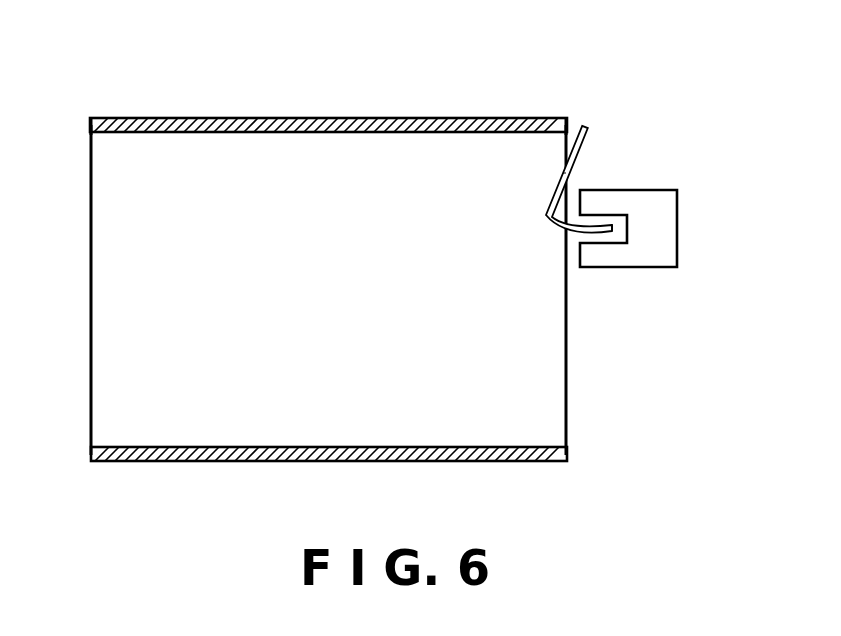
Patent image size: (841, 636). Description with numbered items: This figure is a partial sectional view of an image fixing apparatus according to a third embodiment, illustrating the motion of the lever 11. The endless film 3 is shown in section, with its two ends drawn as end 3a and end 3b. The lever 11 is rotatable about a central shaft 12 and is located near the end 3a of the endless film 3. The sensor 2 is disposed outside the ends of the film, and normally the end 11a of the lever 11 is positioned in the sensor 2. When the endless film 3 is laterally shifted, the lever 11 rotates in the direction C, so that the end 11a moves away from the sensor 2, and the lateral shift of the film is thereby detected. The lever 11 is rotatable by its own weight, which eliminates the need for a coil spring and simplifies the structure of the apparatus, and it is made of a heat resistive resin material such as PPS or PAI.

The sensor 2 is at (668, 230).
The endless film 3 is at (329, 118).
The right end of housing 3a is at (568, 120).
The left end of housing 3b is at (88, 121).
The lever 11 is at (580, 150).
The end of the lever 11a is at (613, 229).
The central shaft 12 is at (563, 173).
The direction C is at (623, 154).